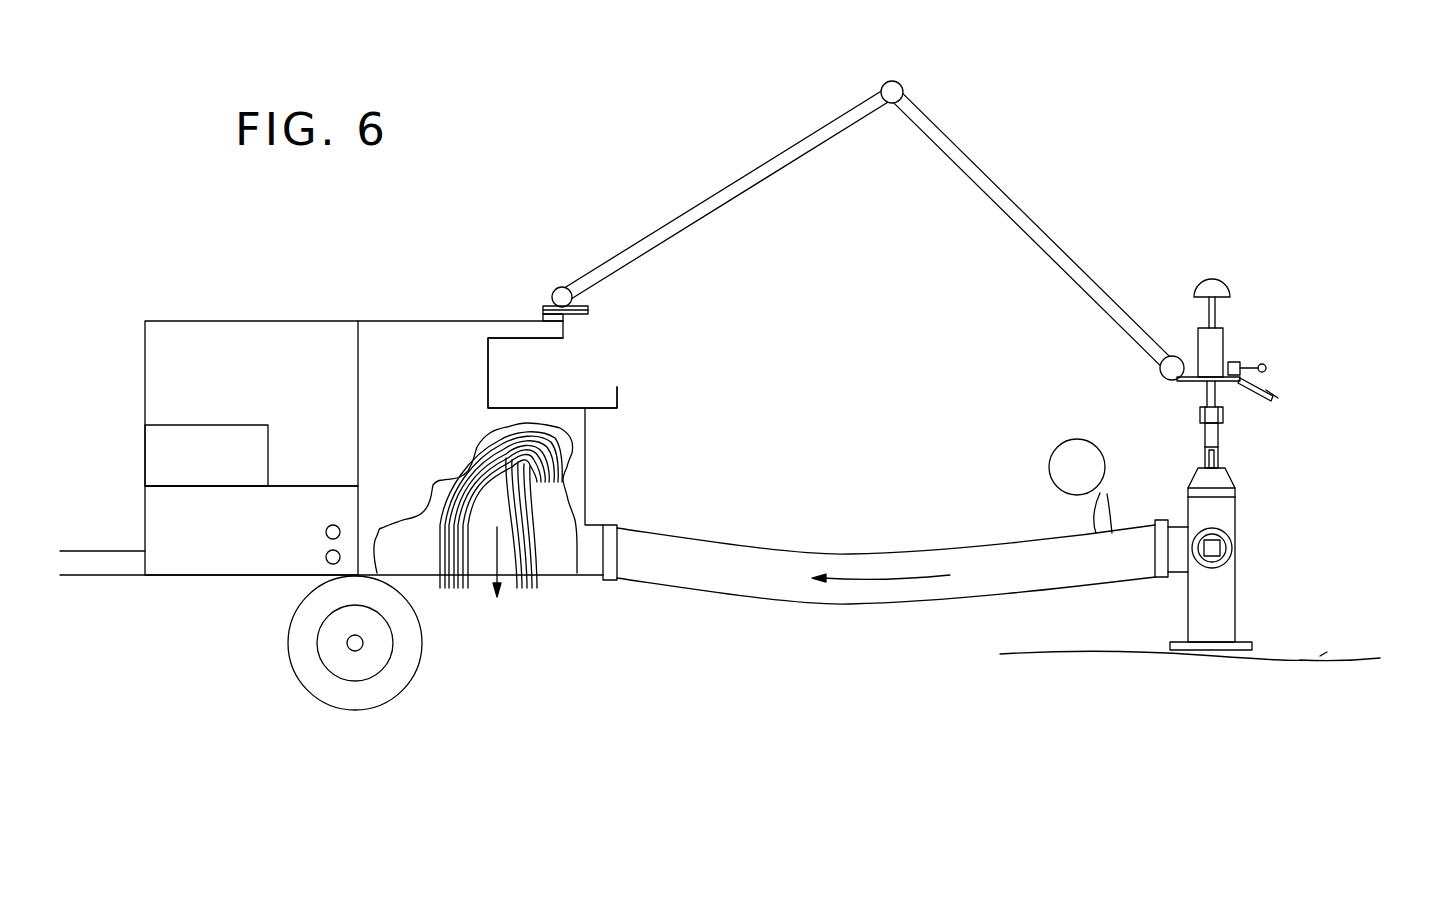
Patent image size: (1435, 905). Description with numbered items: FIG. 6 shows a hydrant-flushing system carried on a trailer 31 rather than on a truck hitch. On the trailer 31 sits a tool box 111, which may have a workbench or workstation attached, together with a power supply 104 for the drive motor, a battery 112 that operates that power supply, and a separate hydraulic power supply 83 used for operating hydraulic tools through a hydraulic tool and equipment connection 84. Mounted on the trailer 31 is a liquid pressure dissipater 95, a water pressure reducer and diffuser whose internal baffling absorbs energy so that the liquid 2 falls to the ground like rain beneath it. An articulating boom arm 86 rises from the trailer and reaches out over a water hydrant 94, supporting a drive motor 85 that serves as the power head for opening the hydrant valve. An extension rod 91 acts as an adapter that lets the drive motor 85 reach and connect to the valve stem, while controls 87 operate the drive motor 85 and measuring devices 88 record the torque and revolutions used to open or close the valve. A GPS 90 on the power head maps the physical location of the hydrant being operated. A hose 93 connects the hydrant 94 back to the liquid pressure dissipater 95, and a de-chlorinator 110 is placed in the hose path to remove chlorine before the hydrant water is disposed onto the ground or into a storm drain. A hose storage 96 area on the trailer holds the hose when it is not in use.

The trailer 31 is at (237, 575).
The tool box with workbench 111 is at (251, 403).
The power supply for drive motor 104 is at (251, 395).
The battery 112 is at (206, 455).
The hydraulic power supply 83 is at (251, 530).
The hydraulic tool and equipment connection 84 is at (327, 539).
The articulating boom arm 86 is at (962, 178).
The hose storage 96 is at (572, 385).
The liquid 2 is at (523, 590).
The liquid pressure dissipater 95 is at (552, 553).
The hose 93 is at (798, 552).
The de-chlorinator 110 is at (1050, 455).
The extension rod 91 is at (1195, 437).
The drive motor 85 is at (1197, 340).
The GPS 90 is at (1225, 278).
The controls 87 is at (1243, 358).
The measuring devices 88 is at (1347, 423).
The water hydrant 94 is at (1240, 514).